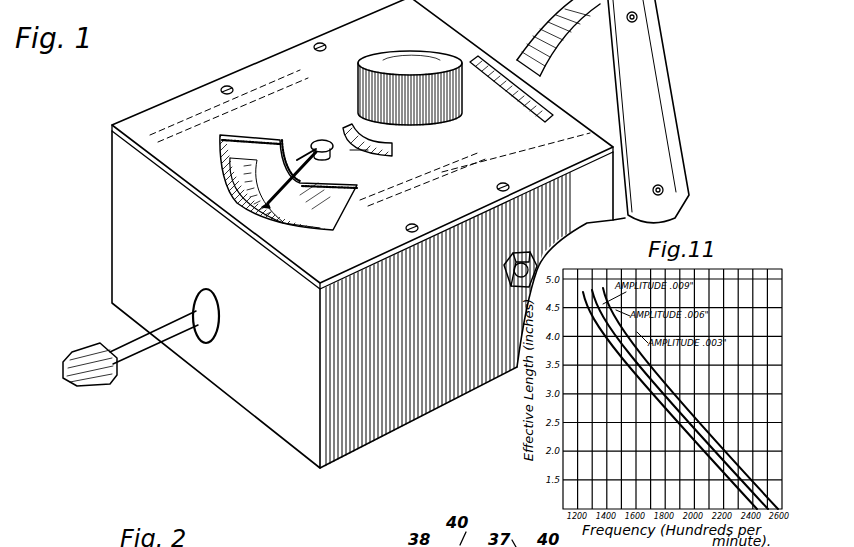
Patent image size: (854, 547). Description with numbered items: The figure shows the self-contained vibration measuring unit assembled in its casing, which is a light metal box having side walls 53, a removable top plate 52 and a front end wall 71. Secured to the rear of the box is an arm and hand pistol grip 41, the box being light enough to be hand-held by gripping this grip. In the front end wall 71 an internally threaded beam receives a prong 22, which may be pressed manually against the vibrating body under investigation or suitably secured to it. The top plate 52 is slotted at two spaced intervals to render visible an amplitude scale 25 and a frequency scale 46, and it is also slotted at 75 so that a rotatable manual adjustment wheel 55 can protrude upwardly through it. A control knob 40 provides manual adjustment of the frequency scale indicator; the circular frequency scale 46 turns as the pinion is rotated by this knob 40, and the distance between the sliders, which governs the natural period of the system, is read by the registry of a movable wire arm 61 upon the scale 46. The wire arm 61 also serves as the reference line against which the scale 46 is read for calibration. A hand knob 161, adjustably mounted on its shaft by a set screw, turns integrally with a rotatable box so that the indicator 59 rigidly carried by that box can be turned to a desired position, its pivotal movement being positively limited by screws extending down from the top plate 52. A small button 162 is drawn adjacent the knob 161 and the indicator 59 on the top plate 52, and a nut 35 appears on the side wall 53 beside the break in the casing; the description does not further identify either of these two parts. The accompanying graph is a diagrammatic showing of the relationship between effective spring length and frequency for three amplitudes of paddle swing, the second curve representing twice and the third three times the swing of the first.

The prong 22 is at (120, 345).
The amplitude scale 25 is at (279, 182).
The nut 35 is at (537, 267).
The control knob 40 is at (447, 118).
The arm and hand pistol grip 41 is at (657, 66).
The frequency scale 46 is at (392, 150).
The top plate 52 is at (365, 137).
The side walls 53 is at (448, 305).
The manual adjustment wheel 55 is at (493, 63).
The indicator 59 is at (300, 176).
The wire arm 61 is at (372, 152).
The front end wall 71 is at (368, 234).
The slot 75 is at (550, 116).
The hand knob 161 is at (318, 138).
The button 162 is at (298, 158).